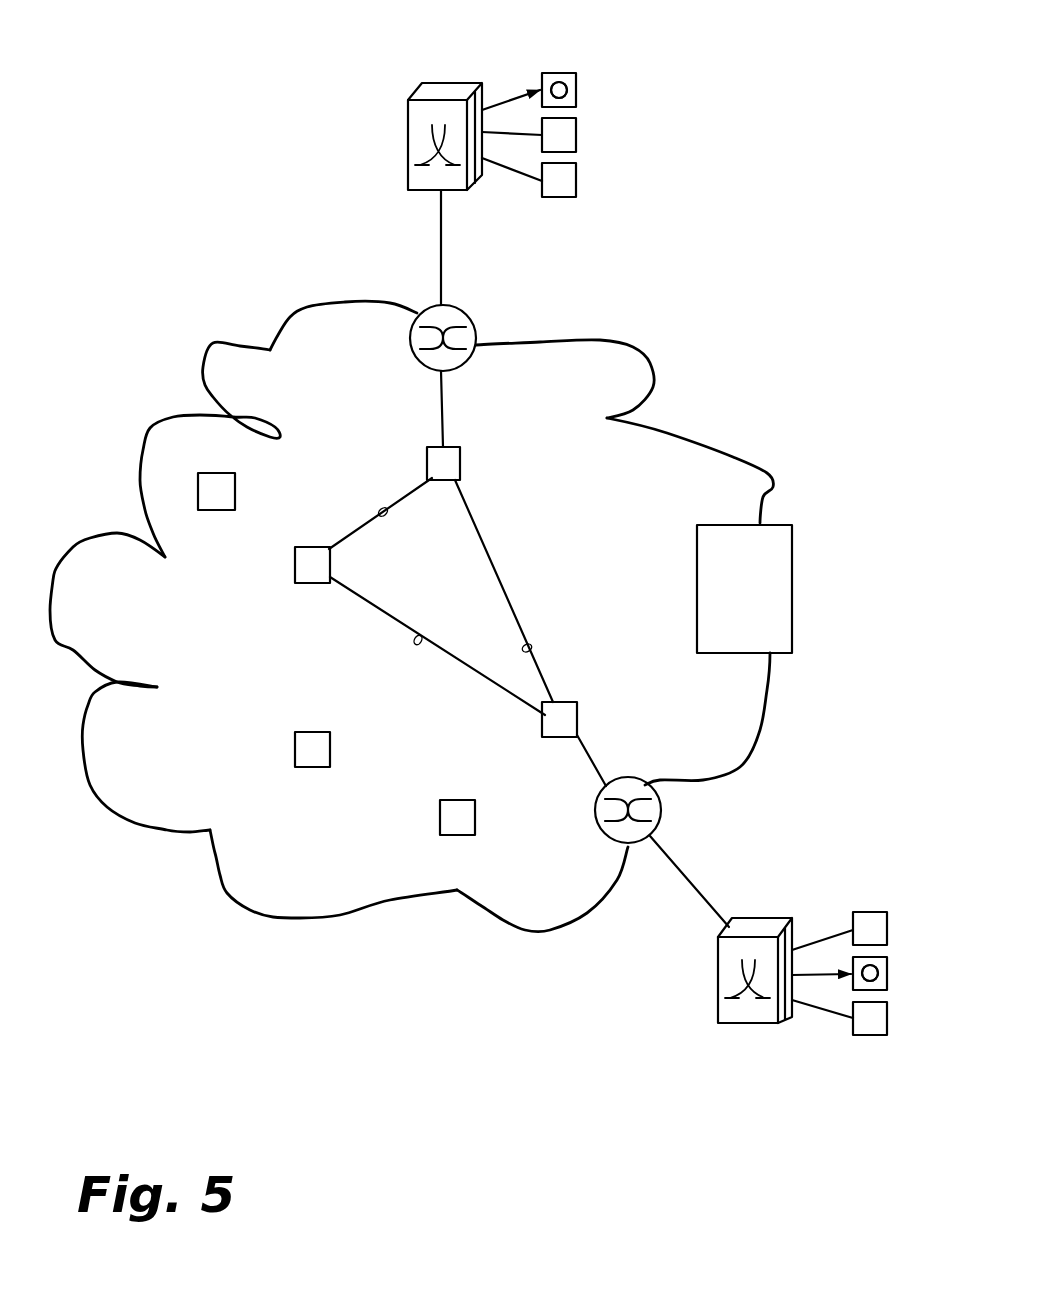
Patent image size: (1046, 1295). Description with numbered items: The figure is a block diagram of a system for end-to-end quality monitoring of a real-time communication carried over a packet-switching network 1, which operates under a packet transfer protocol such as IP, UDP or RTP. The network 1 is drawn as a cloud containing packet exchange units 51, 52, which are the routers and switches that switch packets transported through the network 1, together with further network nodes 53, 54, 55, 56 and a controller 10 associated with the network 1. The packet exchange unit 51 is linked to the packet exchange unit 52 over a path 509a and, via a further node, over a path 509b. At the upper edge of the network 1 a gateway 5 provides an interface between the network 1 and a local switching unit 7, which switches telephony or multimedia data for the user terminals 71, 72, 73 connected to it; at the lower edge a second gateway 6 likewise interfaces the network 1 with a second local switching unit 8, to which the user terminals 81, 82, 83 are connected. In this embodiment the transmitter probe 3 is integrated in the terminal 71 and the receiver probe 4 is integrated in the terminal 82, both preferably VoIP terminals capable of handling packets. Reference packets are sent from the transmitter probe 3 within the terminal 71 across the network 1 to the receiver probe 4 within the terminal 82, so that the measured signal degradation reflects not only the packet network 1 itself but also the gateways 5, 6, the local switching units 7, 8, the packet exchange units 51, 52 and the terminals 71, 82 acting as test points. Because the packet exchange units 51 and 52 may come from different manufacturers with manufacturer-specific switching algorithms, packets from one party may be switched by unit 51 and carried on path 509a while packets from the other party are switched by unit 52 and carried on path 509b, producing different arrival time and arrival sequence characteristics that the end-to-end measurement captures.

The packet-switching network 1 is at (287, 327).
The transmitter probe 3 is at (565, 83).
The receiver probe 4 is at (862, 978).
The gateway 5 is at (465, 315).
The gateway 6 is at (661, 812).
The local switching unit 7 is at (408, 146).
The local switching unit 8 is at (718, 1000).
The controller 10 is at (780, 583).
The packet exchange unit 51 is at (460, 457).
The packet exchange unit 52 is at (542, 718).
The network node 53 is at (215, 510).
The network node 54 is at (310, 583).
The network node 55 is at (290, 752).
The network node 56 is at (440, 817).
The path 509a is at (585, 621).
The path 509b is at (385, 516).
The terminal 71 is at (576, 92).
The user terminal 72 is at (576, 137).
The user terminal 73 is at (576, 182).
The user terminal 81 is at (887, 925).
The terminal 82 is at (887, 970).
The user terminal 83 is at (887, 1015).